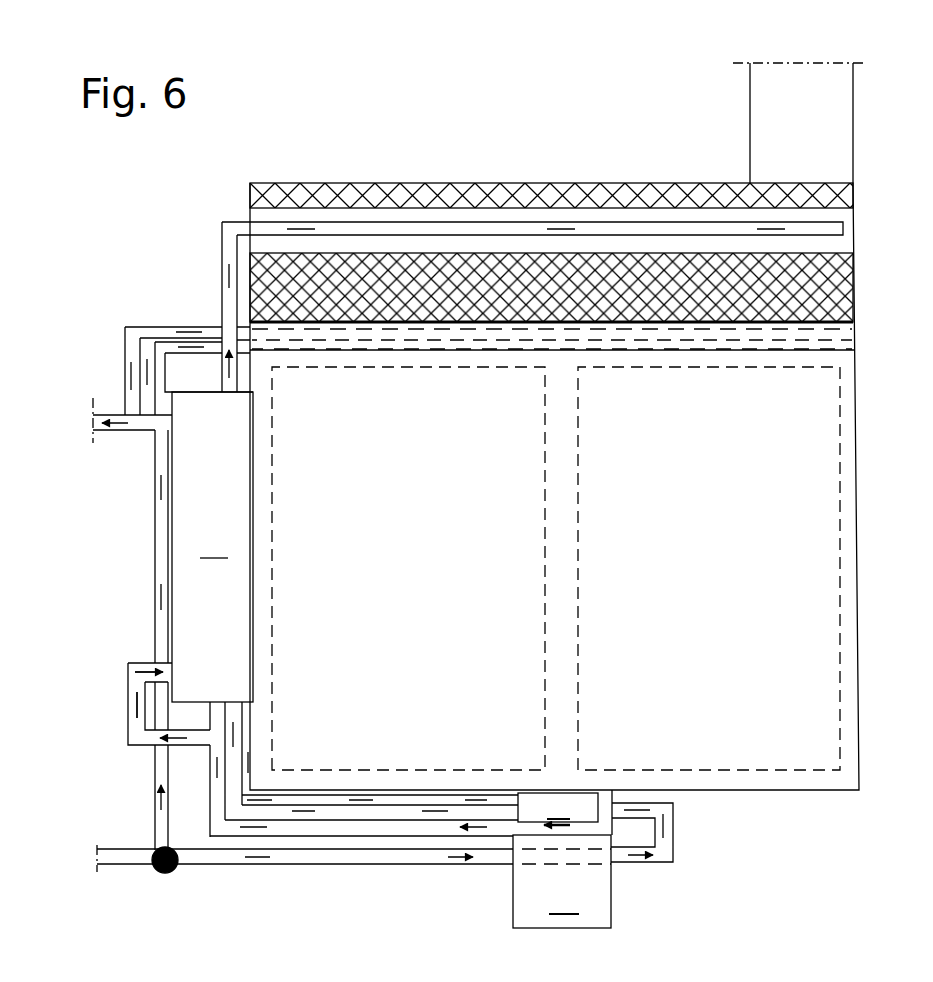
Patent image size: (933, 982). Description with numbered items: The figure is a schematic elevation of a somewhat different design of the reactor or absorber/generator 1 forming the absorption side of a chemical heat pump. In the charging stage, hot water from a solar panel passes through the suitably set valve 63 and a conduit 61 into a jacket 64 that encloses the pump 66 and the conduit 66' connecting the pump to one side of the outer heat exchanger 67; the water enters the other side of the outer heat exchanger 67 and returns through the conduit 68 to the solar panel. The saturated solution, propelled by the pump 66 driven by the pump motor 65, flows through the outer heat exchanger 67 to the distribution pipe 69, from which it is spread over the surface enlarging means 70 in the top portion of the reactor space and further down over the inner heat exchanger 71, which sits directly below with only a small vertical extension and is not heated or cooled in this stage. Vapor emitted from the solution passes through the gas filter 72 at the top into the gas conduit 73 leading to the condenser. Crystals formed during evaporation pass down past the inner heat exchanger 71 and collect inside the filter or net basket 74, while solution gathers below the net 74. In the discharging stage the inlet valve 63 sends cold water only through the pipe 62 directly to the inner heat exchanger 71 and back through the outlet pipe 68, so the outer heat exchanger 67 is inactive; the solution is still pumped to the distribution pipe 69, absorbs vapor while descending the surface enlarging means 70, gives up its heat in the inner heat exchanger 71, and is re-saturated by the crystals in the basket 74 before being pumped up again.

The reactor or absorber/generator 1 is at (156, 181).
The conduit 61 is at (272, 868).
The pipe 62 is at (155, 783).
The valve 63 is at (165, 873).
The jacket 64 is at (210, 793).
The pump motor 65 is at (593, 859).
The pump 66 is at (558, 809).
The conduit 66' is at (377, 854).
The outer heat exchanger 67 is at (209, 514).
The conduit (outlet pipe) 68 is at (115, 432).
The distribution pipe 69 is at (845, 229).
The surface enlarging means 70 is at (551, 287).
The inner heat exchanger 71 is at (482, 342).
The gas filter 72 is at (538, 185).
The gas conduit 73 is at (750, 107).
The filter or net basket 74 is at (283, 748).